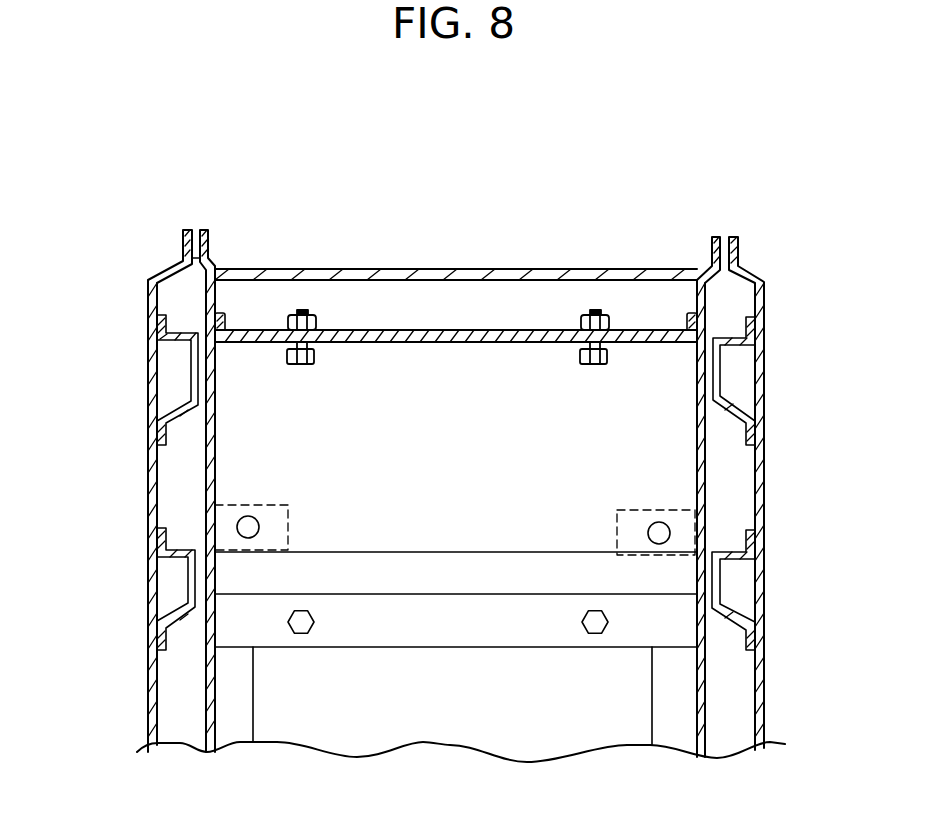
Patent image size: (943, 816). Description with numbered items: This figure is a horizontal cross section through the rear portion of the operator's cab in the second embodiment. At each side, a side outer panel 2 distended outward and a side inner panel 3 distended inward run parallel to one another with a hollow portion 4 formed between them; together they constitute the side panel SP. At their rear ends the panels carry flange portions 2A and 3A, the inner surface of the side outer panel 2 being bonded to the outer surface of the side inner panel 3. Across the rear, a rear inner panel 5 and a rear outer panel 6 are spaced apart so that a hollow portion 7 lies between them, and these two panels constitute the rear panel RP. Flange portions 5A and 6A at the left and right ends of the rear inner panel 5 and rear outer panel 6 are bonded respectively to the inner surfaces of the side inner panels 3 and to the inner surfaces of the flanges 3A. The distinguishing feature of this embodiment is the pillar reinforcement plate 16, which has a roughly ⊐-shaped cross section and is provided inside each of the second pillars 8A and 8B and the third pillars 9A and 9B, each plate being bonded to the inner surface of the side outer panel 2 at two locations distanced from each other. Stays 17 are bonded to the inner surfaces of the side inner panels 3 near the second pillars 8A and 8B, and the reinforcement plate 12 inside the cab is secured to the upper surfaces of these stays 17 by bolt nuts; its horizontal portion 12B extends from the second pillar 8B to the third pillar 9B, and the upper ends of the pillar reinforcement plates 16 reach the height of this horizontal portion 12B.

The side outer panel 2 is at (439, 458).
The flange portion 2A is at (183, 248).
The flange portion 3A is at (194, 231).
The side inner panel 3 is at (210, 676).
The hollow portion 4 is at (177, 728).
The rear inner panel 5 is at (371, 344).
The flange portion 5A is at (222, 316).
The rear outer panel 6 is at (546, 268).
The flange portion 6A is at (209, 250).
The hollow portion 7 is at (553, 305).
The second pillar 8A is at (728, 583).
The second pillar 8B is at (172, 585).
The third pillar 9A is at (736, 381).
The third pillar 9B is at (178, 381).
The reinforcement plate 12 is at (634, 492).
The horizontal portion 12B is at (638, 442).
The pillar reinforcement plate 16 is at (166, 358).
The stay 17 is at (247, 512).
The rear panel RP is at (418, 258).
The side panel SP is at (138, 675).